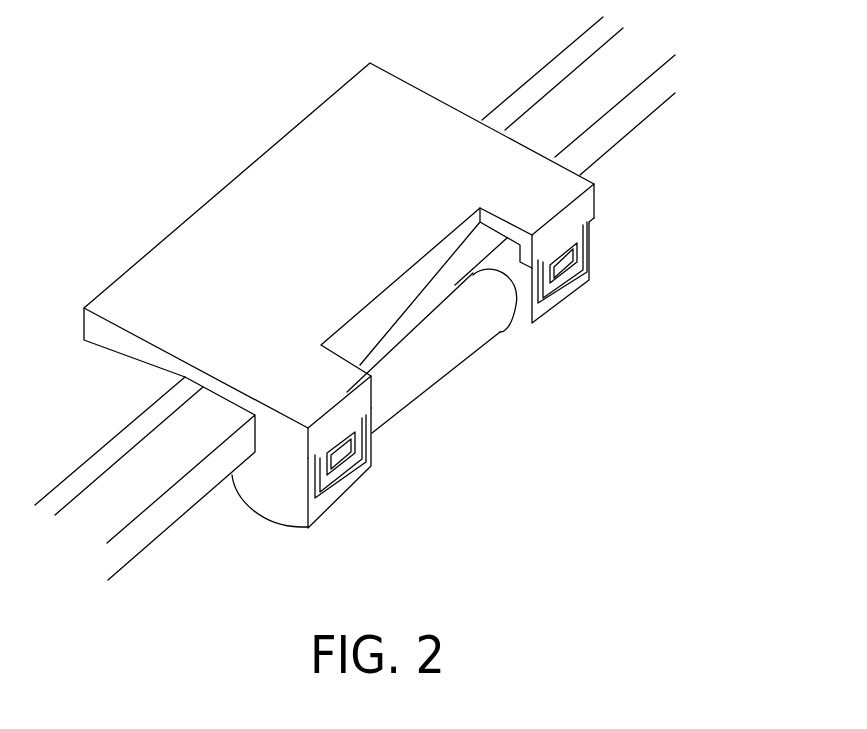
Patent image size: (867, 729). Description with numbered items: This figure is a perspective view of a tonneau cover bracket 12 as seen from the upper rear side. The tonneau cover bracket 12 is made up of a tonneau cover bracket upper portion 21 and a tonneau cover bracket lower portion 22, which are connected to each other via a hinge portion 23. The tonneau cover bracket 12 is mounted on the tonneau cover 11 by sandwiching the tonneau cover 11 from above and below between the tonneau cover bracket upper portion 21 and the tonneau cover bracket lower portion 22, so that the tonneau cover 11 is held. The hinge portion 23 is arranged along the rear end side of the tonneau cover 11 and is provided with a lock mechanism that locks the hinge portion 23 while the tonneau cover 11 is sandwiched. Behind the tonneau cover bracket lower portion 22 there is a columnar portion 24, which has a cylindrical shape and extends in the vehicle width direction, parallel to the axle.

The tonneau cover 11 is at (483, 65).
The tonneau cover bracket 12 is at (264, 130).
The tonneau cover bracket upper portion 21 is at (268, 205).
The tonneau cover bracket lower portion 22 is at (260, 498).
The hinge portion 23 is at (537, 320).
The columnar portion 24 is at (443, 358).